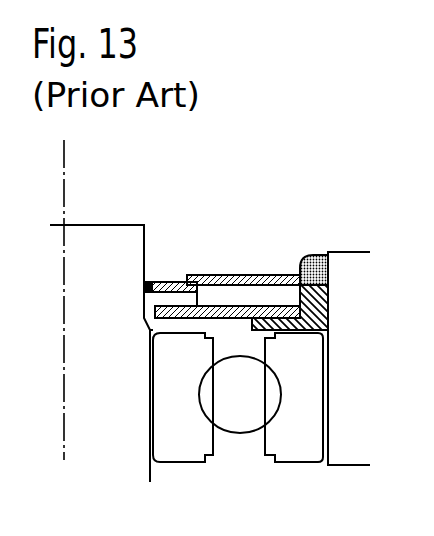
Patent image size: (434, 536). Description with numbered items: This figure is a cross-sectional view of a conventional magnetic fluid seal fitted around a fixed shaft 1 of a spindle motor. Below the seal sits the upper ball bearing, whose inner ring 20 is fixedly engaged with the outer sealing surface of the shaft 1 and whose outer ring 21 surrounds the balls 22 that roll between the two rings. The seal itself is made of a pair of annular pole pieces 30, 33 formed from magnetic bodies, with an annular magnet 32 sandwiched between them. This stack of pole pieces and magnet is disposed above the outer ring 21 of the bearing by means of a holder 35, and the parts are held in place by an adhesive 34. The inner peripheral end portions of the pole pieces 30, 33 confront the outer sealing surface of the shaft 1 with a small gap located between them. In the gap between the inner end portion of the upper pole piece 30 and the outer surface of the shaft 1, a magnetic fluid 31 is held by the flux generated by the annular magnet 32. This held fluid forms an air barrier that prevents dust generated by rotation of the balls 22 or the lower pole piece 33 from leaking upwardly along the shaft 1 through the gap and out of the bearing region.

The shaft 1 is at (93, 248).
The inner ring 20 is at (168, 407).
The outer ring 21 is at (305, 415).
The balls 22 is at (237, 420).
The pole piece 30 is at (210, 277).
The magnetic fluid 31 is at (149, 282).
The annular magnet 32 is at (262, 297).
The pole piece 33 is at (232, 305).
The adhesive 34 is at (317, 255).
The holder 35 is at (312, 308).